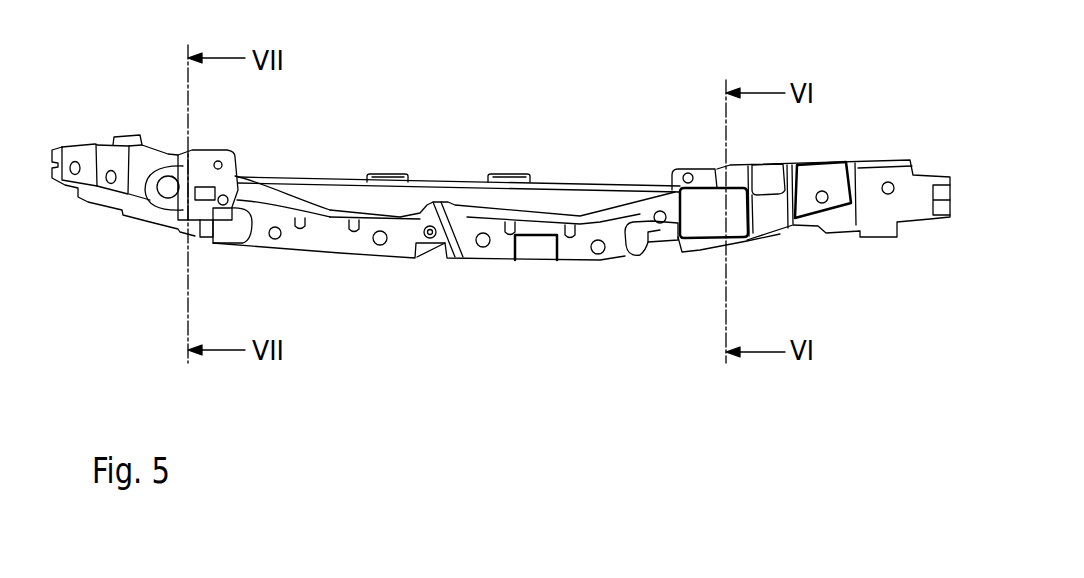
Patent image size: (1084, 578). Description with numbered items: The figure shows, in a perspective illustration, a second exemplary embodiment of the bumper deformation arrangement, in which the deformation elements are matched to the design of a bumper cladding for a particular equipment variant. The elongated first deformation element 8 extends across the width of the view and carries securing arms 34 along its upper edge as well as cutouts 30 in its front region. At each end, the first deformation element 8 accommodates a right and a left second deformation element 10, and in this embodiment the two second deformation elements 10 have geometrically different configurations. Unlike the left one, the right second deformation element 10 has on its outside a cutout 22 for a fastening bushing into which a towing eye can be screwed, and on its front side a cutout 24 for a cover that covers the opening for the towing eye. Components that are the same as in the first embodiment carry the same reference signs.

The first deformation element 8 is at (53, 120).
The second deformation element 10 is at (178, 210).
The cutout 22 is at (177, 180).
The cutout 24 is at (205, 188).
The cutout 30 is at (226, 226).
The securing arm 34 is at (386, 178).